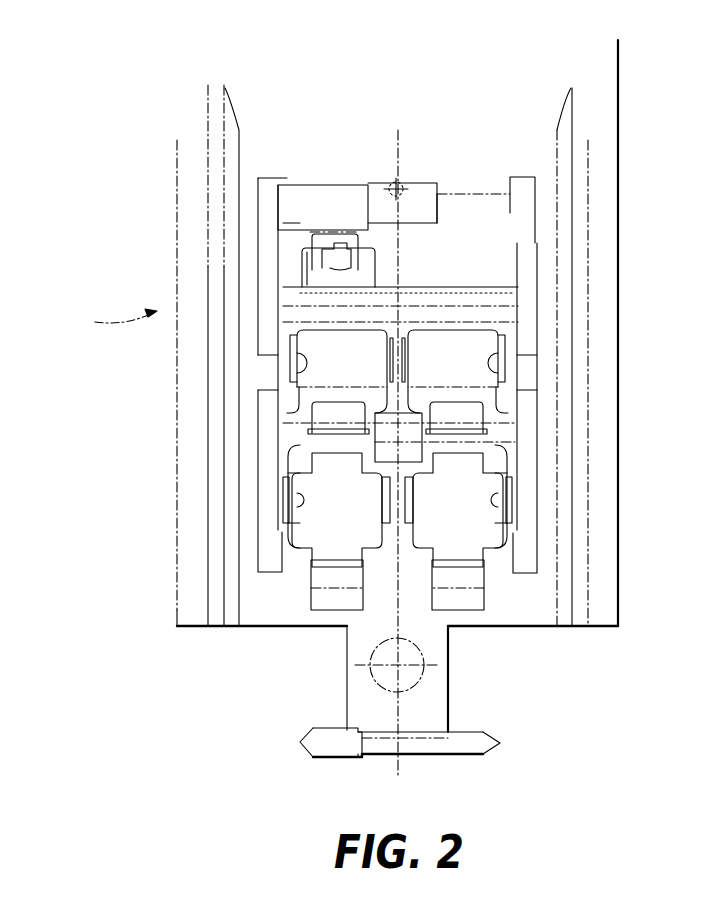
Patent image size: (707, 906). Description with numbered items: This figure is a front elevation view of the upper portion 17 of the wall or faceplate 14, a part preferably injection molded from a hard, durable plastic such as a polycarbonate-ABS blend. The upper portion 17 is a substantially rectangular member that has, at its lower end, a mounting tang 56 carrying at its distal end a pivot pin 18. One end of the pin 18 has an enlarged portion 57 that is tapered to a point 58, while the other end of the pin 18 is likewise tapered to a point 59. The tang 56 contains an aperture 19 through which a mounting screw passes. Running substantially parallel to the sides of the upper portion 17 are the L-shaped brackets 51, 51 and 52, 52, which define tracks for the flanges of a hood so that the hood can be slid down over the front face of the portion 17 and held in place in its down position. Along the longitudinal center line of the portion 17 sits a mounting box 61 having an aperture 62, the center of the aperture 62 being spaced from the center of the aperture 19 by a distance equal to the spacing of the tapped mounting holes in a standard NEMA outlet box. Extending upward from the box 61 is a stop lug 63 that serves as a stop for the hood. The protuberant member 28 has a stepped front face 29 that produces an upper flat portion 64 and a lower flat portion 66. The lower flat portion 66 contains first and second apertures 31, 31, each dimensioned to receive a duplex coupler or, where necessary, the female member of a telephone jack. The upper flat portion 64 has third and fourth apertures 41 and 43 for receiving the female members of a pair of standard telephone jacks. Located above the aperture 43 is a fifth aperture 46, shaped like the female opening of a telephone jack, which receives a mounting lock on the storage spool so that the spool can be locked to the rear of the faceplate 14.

The faceplate 14 is at (107, 315).
The upper portion 17 is at (359, 407).
The pivot pin 18 is at (438, 748).
The aperture 19 is at (410, 678).
The protuberant member 28 is at (497, 224).
The front face 29 is at (508, 433).
The first and second apertures 31 is at (280, 490).
The third aperture 41 is at (500, 355).
The fourth aperture 43 is at (285, 352).
The fifth aperture 46 is at (300, 262).
The L-shaped brackets 51 is at (527, 280).
The L-shaped brackets 52 is at (262, 280).
The mounting tang 56 is at (355, 690).
The enlarged portion 57 is at (337, 762).
The point 58 is at (305, 730).
The point 59 is at (500, 744).
The mounting box 61 is at (420, 180).
The aperture 62 is at (386, 172).
The stop lug 63 is at (402, 150).
The upper flat portion 64 is at (283, 402).
The lower flat portion 66 is at (280, 437).